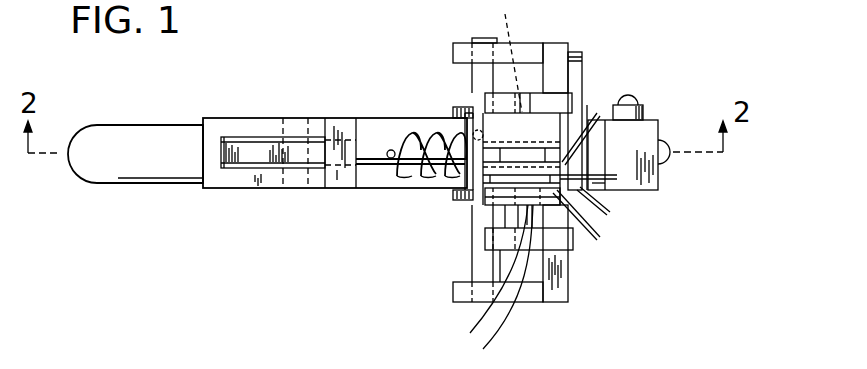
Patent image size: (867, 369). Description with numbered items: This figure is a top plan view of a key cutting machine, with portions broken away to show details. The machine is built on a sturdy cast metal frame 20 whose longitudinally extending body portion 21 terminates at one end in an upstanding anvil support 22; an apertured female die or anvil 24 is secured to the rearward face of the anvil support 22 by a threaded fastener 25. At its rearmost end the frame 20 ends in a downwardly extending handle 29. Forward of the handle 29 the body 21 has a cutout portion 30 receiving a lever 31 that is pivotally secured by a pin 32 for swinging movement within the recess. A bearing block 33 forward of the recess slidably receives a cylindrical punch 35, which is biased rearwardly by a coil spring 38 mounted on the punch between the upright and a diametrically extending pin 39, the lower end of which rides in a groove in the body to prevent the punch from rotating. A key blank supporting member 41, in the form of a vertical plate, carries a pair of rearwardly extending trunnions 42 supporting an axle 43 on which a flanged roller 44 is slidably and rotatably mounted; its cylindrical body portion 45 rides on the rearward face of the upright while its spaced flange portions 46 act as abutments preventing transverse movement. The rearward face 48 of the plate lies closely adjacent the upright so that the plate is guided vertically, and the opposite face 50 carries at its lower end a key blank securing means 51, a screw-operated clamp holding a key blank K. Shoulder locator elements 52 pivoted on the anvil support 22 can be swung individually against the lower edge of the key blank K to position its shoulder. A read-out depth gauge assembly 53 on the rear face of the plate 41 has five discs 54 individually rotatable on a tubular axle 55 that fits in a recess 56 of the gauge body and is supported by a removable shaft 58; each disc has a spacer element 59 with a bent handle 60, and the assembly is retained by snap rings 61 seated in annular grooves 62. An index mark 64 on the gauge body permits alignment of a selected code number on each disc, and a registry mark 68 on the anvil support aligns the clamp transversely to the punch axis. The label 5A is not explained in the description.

The frame 20 is at (211, 181).
The body portion 21 is at (382, 117).
The anvil support 22 is at (651, 186).
The anvil 24 is at (578, 193).
The threaded fastener 25 is at (668, 160).
The handle 29 is at (125, 134).
The cutout portion 30 is at (248, 136).
The lever 31 is at (280, 170).
The pin 32 is at (305, 125).
The bearing block 33 is at (340, 186).
The punch 35 is at (318, 140).
The coil spring 38 is at (434, 135).
The pin 39 is at (390, 165).
The key blank supporting member 41 is at (556, 52).
The trunnions 42 is at (462, 47).
The axle 43 is at (471, 266).
The flanged roller 44 is at (460, 198).
The cylindrical body portion 45 is at (480, 117).
The flange portions 46 is at (453, 196).
The rearward face 48 is at (543, 266).
The opposite face 50 is at (569, 279).
The key blank securing means 51 is at (583, 201).
The shoulder locator elements 52 is at (644, 105).
The read-out depth gauge assembly 53 is at (580, 98).
The discs 54 is at (550, 135).
The tubular axle 55 is at (541, 226).
The recess 56 is at (500, 223).
The shaft 58 is at (497, 56).
The spacer elements 59 is at (558, 196).
The handle 60 is at (596, 135).
The snap rings 61 is at (493, 287).
The annular grooves 62 is at (480, 279).
The index mark 64 is at (521, 107).
The registry mark 68 is at (617, 152).
The key blank K is at (583, 78).
The lead 5A is at (530, 363).